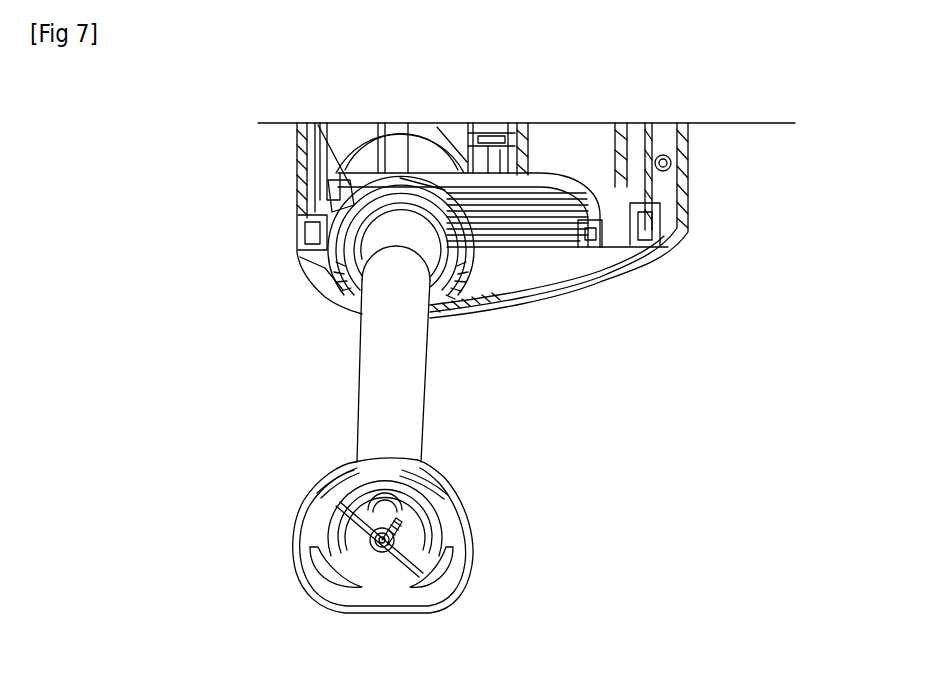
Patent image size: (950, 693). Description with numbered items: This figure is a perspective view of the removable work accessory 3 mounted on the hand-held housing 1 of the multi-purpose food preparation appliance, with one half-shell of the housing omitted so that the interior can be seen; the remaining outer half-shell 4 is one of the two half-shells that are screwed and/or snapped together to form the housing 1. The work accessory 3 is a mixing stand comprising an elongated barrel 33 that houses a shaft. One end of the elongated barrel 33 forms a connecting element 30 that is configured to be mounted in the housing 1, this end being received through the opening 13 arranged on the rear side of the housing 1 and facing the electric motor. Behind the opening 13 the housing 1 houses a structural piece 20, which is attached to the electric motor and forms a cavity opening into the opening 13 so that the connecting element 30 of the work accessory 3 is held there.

The hand-held housing 1 is at (700, 298).
The removable work accessory 3 is at (268, 566).
The outer half-shell 4 is at (543, 270).
The opening 13 is at (343, 273).
The structural piece 20 is at (593, 197).
The connecting element 30 is at (397, 200).
The elongated barrel 33 is at (403, 420).